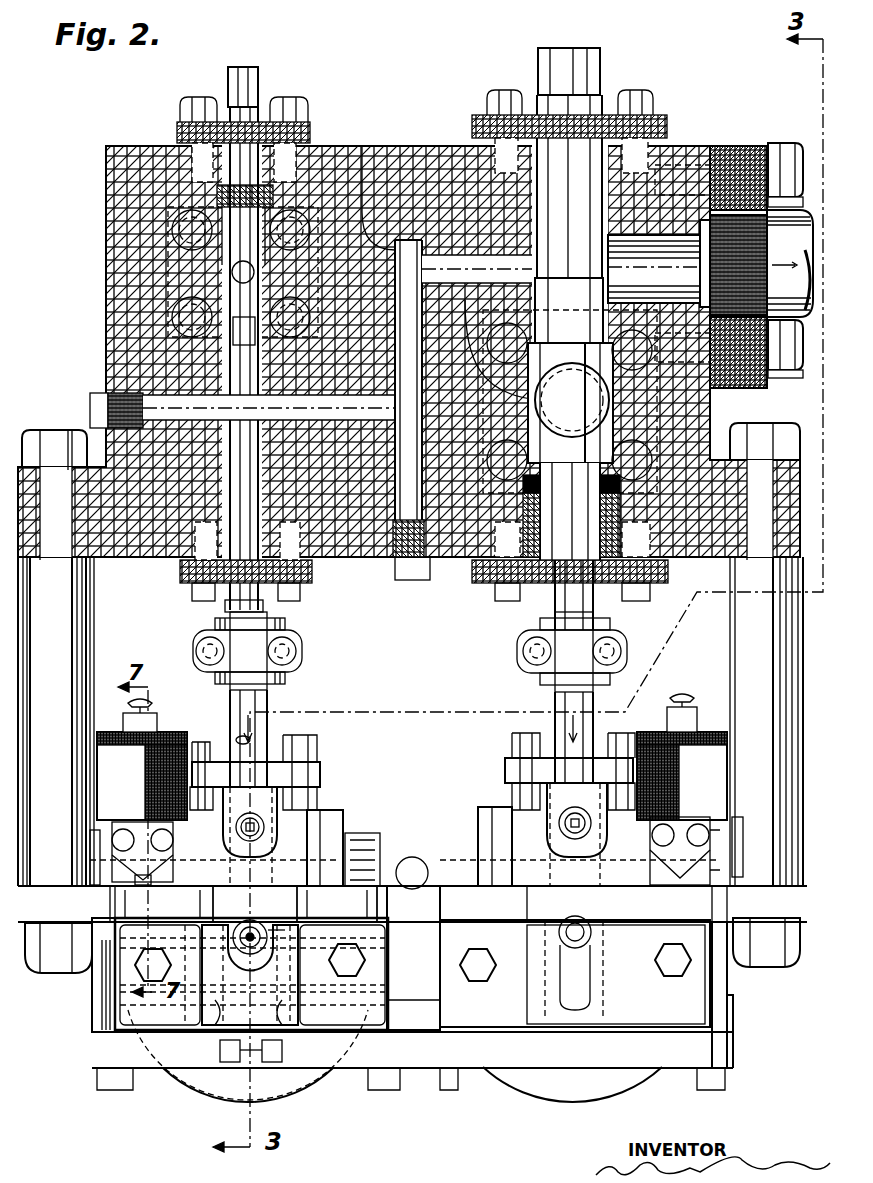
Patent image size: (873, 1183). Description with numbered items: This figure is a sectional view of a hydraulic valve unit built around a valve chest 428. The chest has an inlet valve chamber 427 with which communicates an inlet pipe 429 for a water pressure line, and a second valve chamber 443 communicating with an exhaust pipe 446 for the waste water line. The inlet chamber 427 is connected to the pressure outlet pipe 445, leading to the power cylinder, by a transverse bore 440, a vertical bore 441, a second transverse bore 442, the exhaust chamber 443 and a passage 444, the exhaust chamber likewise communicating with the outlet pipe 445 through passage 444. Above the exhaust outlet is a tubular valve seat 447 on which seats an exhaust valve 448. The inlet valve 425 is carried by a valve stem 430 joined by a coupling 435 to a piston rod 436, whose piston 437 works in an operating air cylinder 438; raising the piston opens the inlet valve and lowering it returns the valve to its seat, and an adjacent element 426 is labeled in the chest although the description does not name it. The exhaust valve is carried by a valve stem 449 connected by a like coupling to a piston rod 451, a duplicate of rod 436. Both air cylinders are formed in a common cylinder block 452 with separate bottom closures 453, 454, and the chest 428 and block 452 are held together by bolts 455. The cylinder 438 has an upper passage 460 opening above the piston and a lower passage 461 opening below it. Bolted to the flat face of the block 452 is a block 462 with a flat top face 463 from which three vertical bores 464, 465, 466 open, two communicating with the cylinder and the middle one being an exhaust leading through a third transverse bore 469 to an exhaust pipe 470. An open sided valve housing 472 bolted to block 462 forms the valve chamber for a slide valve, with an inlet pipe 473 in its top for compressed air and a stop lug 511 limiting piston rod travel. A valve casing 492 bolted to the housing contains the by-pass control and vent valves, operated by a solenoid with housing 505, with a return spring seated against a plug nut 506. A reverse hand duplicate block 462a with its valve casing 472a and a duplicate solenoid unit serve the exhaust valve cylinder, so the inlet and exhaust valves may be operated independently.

The inlet valve 425 is at (233, 317).
The bolt 426 is at (235, 340).
The valve chamber 427 is at (220, 273).
The valve chest 428 is at (115, 258).
The inlet pipe 429 is at (230, 257).
The valve stem 430 is at (242, 125).
The coupling 435 is at (302, 655).
The piston rod 436 is at (267, 710).
The piston 437 is at (125, 968).
The operating air cylinder 438 is at (107, 987).
The transverse bore 440 is at (270, 407).
The vertical bore 441 is at (362, 146).
The second transverse bore 442 is at (440, 262).
The second valve chamber 443 is at (603, 433).
The passage 444 is at (686, 263).
The pressure outlet pipe 445 is at (761, 263).
The exhaust pipe 446 is at (477, 297).
The tubular valve seat 447 is at (760, 378).
The exhaust valve 448 is at (560, 287).
The valve stem 449 is at (570, 195).
The piston rod 451 is at (565, 700).
The common cylinder block 452 is at (413, 958).
The bottom closure 453 is at (206, 1080).
The bottom closure 454 is at (617, 1068).
The bolts 455 is at (60, 533).
The upper passage 460 is at (213, 903).
The lower passage 461 is at (282, 1045).
The block 462 is at (133, 1010).
The block 462a is at (693, 1010).
The flat top face 463 is at (387, 908).
The vertical bore 464 is at (227, 1005).
The vertical bore 465 is at (367, 1013).
The vertical bore 466 is at (370, 890).
The third transverse bore 469 is at (268, 938).
The exhaust pipe 470 is at (233, 937).
The valve housing 472 is at (333, 810).
The valve casing 472a is at (493, 820).
The inlet pipe 473 is at (238, 737).
The valve casing 492 is at (112, 860).
The housing 505 is at (142, 759).
The plug nut 506 is at (105, 885).
The stop lug 511 is at (377, 842).